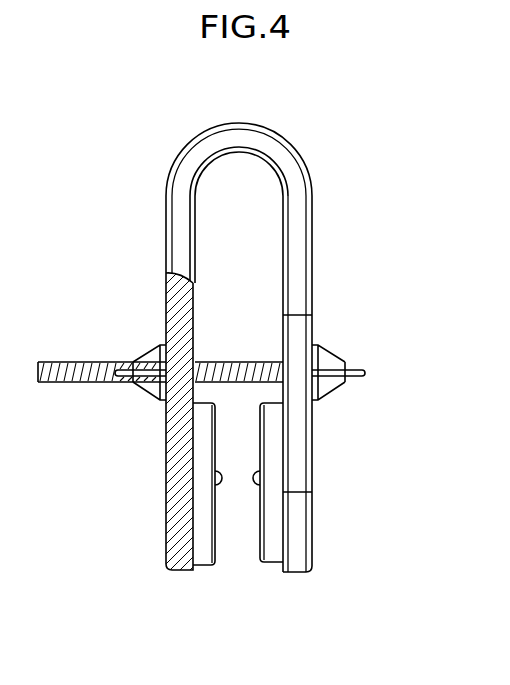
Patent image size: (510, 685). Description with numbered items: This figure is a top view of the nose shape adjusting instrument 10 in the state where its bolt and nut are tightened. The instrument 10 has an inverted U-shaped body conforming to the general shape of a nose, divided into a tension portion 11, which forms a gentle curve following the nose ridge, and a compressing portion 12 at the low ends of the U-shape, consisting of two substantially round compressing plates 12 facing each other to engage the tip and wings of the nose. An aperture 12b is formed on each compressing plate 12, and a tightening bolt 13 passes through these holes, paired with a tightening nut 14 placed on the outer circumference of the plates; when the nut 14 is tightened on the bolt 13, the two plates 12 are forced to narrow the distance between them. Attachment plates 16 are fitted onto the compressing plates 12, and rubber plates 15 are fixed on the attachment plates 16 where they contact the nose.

The nose shape adjusting instrument 10 is at (223, 356).
The tension portion 11 is at (244, 135).
The compressing portion 12 is at (300, 525).
The aperture 12b is at (172, 400).
The tightening bolt 13 is at (223, 349).
The tightening nut 14 is at (148, 362).
The rubber plates 15 is at (228, 478).
The attachment plates 16 is at (203, 555).